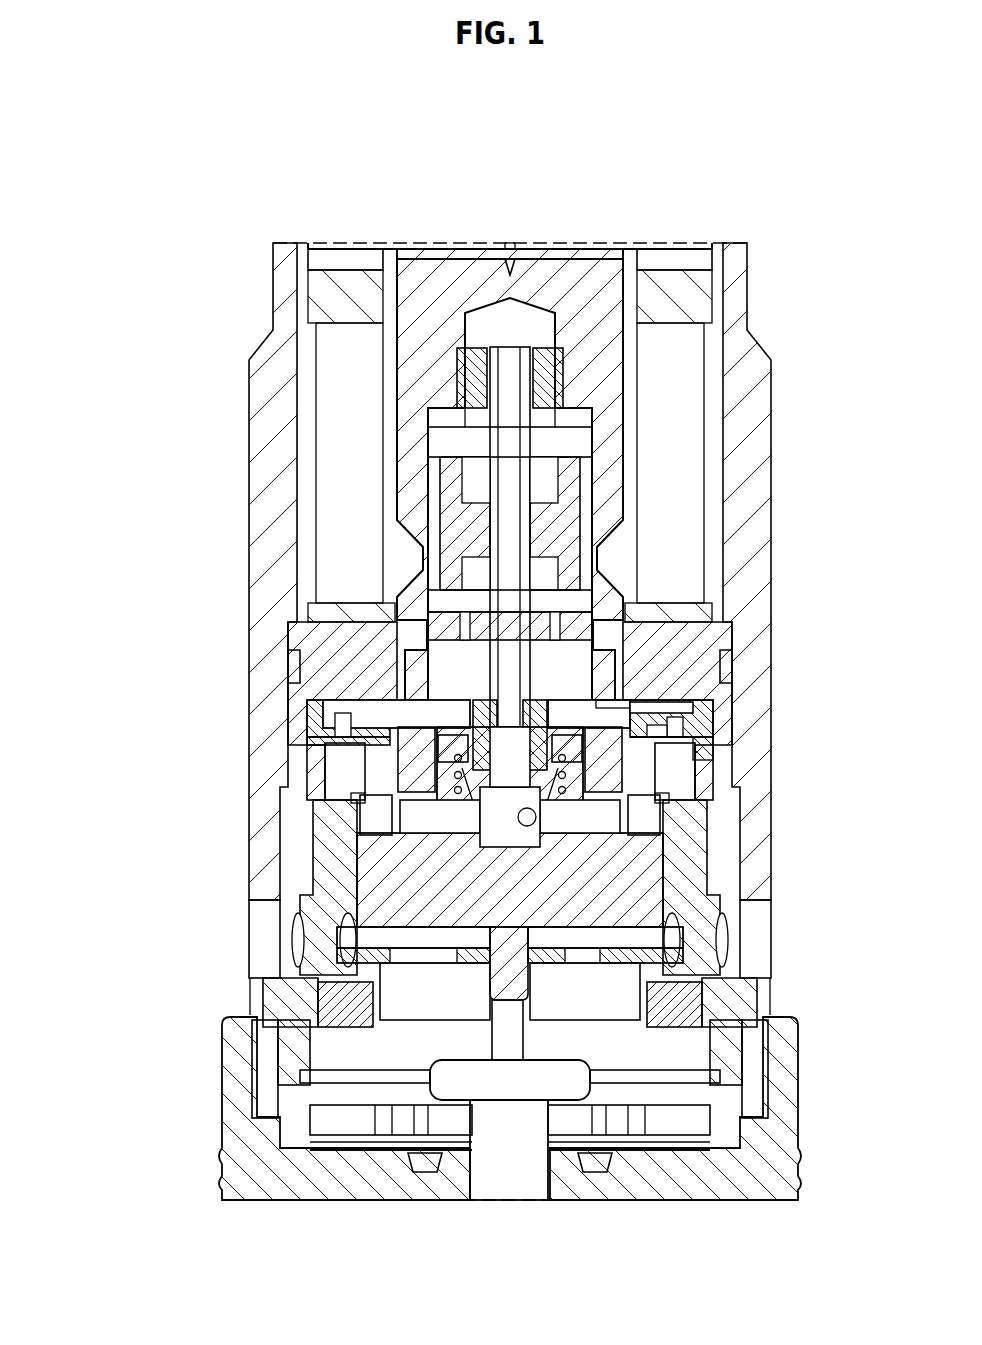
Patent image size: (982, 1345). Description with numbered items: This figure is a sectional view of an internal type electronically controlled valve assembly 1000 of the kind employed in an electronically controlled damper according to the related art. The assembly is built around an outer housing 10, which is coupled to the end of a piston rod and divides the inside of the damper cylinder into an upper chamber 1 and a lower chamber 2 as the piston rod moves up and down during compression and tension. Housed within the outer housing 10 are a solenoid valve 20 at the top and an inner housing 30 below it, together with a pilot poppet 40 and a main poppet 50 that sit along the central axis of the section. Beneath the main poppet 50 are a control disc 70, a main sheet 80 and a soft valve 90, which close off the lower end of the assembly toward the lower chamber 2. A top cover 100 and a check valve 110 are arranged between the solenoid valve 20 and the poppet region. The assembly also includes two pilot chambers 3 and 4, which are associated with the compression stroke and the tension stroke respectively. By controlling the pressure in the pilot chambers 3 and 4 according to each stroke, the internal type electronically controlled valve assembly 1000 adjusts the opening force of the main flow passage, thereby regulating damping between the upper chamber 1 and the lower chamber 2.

The internal type electronically controlled valve assembly 1000 is at (137, 197).
The outer housing 10 is at (281, 289).
The solenoid valve 20 is at (405, 378).
The inner housing 30 is at (330, 852).
The pilot poppet 40 is at (483, 758).
The main poppet 50 is at (650, 897).
The control disc 70 is at (688, 953).
The main sheet 80 is at (343, 1005).
The soft valve 90 is at (225, 1135).
The top cover 100 is at (400, 707).
The check valve 110 is at (709, 733).
The pilot chamber 3 is at (605, 712).
The pilot chamber 4 is at (632, 822).
The upper chamber 1 is at (847, 316).
The lower chamber 2 is at (274, 1263).